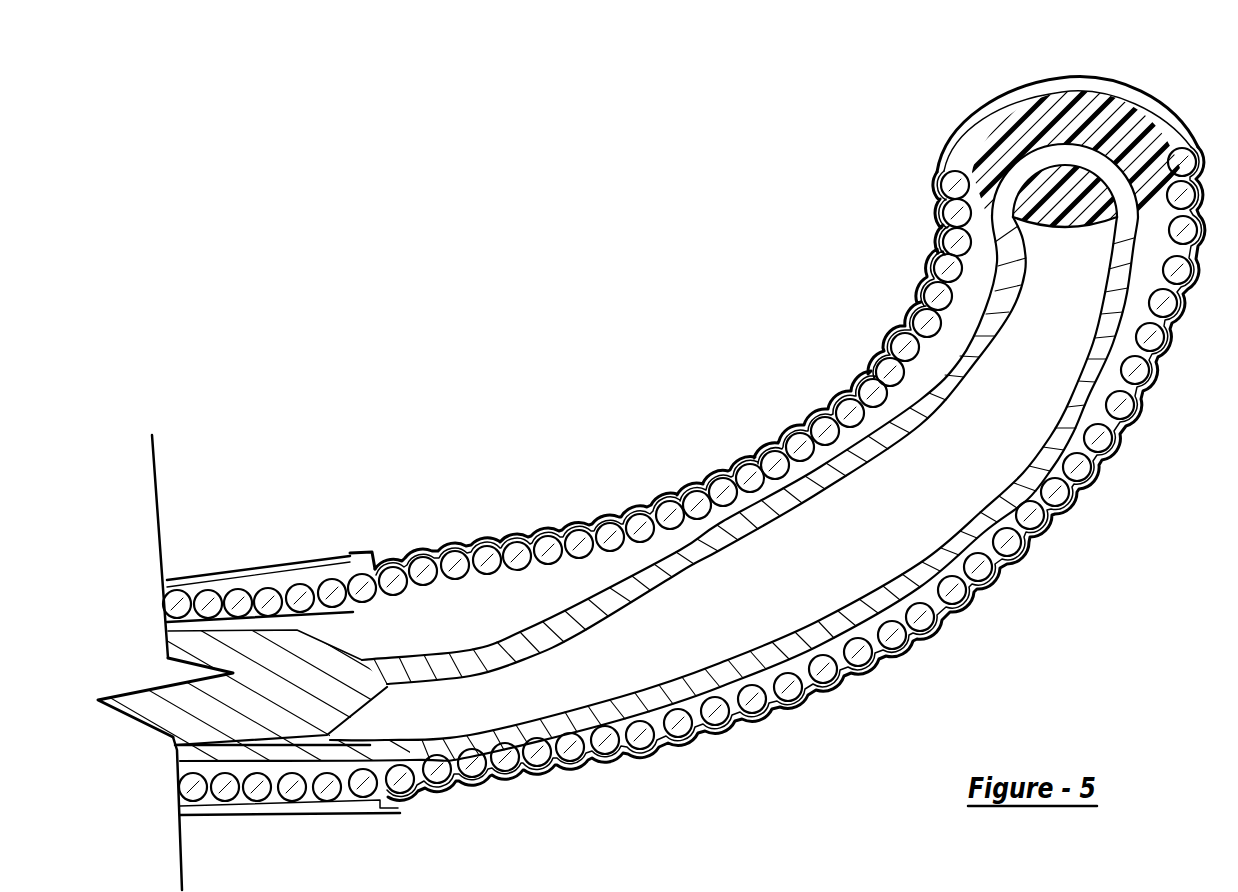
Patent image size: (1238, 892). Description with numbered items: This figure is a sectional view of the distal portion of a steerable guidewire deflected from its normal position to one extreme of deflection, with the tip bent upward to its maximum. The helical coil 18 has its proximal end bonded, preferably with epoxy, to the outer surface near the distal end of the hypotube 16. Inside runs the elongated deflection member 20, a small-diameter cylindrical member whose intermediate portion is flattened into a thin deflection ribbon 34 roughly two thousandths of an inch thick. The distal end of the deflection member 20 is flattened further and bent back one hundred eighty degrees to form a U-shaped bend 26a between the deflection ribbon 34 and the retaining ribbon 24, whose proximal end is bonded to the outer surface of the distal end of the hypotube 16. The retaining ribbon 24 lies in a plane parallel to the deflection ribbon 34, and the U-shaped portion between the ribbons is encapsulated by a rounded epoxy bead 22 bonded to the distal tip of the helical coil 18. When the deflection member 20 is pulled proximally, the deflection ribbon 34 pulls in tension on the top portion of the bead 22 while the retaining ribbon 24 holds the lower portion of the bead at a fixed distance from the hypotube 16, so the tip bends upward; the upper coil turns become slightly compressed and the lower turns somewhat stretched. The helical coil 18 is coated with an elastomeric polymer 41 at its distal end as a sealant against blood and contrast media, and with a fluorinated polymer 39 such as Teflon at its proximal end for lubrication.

The hypotube 16 is at (184, 622).
The helical coil 18 is at (660, 512).
The deflection member 20 is at (293, 645).
The epoxy bead 22 is at (1113, 125).
The retaining ribbon 24 is at (340, 755).
The U-shaped bend 26a is at (1055, 160).
The deflection ribbon 34 is at (862, 445).
The fluorinated polymer 39 is at (348, 553).
The elastomeric polymer 41 is at (497, 540).